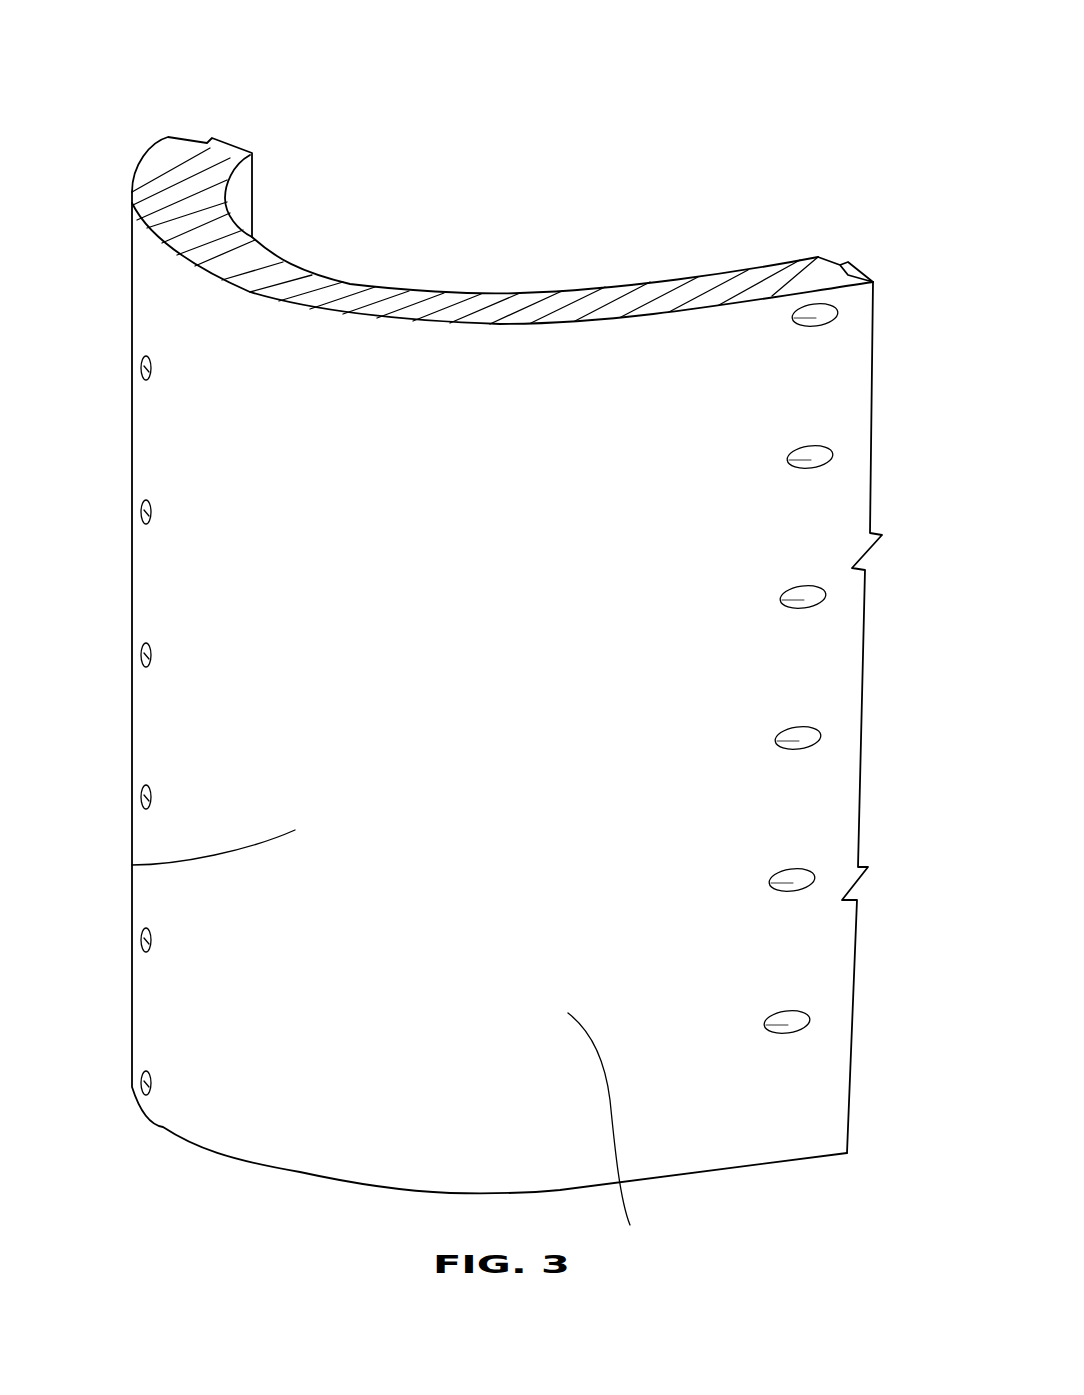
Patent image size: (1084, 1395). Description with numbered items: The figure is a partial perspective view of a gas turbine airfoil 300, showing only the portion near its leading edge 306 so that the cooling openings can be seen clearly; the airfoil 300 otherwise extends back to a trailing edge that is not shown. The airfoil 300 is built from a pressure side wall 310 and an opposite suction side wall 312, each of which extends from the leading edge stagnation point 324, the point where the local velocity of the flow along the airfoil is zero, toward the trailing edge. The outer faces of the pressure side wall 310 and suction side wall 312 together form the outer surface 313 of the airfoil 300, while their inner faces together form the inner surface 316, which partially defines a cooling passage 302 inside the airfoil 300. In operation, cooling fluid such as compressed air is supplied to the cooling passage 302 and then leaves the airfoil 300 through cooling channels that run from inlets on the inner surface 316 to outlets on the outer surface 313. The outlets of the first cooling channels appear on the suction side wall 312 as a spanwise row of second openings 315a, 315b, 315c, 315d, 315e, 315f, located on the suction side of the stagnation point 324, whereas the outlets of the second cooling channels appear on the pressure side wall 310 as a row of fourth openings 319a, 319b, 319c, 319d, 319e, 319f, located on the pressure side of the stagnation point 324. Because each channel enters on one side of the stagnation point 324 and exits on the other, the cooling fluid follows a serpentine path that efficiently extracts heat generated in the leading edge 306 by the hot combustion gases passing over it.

The gas turbine airfoil 300 is at (161, 92).
The cooling passage 302 is at (463, 252).
The leading edge 306 is at (132, 865).
The pressure side wall 310 is at (800, 275).
The suction side wall 312 is at (165, 183).
The outer surface 313 is at (630, 1225).
The second opening 315a is at (142, 367).
The second opening 315b is at (142, 511).
The second opening 315c is at (142, 654).
The second opening 315d is at (142, 796).
The second opening 315e is at (142, 939).
The second opening 315f is at (142, 1082).
The inner surface 316 is at (242, 200).
The fourth opening 319a is at (811, 312).
The fourth opening 319b is at (806, 454).
The fourth opening 319c is at (799, 594).
The fourth opening 319d is at (794, 735).
The fourth opening 319e is at (788, 877).
The fourth opening 319f is at (783, 1019).
The leading edge stagnation point 324 is at (238, 543).